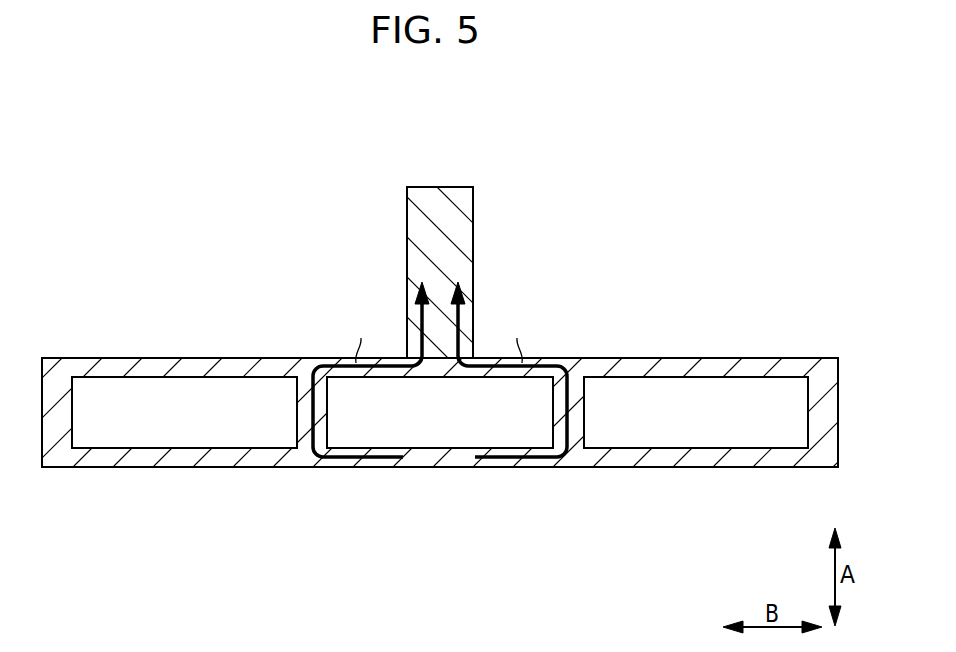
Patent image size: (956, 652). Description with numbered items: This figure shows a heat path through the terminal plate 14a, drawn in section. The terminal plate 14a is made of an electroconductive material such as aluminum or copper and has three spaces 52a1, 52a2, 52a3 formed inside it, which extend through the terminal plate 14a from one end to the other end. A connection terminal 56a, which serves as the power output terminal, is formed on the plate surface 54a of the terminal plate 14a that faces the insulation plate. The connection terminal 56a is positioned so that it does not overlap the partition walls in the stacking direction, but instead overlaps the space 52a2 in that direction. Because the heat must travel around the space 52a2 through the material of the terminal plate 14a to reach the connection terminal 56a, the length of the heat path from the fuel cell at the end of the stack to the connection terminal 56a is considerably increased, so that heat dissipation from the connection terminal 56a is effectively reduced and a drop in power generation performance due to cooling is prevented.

The terminal plate 14a is at (454, 105).
The space 52a1 is at (695, 428).
The space 52a2 is at (437, 428).
The space 52a3 is at (175, 428).
The plate surface 54a is at (675, 358).
The connection terminal 56a is at (467, 230).